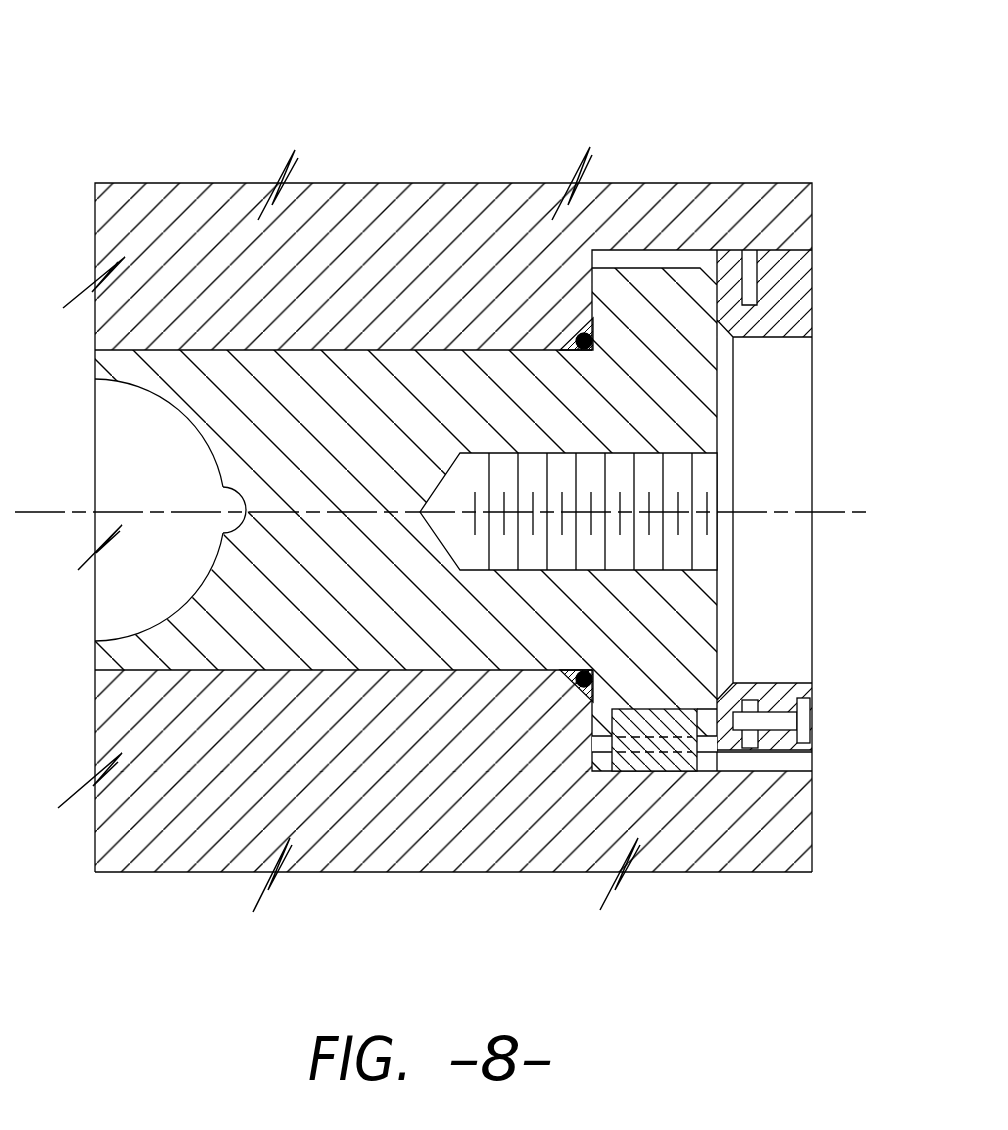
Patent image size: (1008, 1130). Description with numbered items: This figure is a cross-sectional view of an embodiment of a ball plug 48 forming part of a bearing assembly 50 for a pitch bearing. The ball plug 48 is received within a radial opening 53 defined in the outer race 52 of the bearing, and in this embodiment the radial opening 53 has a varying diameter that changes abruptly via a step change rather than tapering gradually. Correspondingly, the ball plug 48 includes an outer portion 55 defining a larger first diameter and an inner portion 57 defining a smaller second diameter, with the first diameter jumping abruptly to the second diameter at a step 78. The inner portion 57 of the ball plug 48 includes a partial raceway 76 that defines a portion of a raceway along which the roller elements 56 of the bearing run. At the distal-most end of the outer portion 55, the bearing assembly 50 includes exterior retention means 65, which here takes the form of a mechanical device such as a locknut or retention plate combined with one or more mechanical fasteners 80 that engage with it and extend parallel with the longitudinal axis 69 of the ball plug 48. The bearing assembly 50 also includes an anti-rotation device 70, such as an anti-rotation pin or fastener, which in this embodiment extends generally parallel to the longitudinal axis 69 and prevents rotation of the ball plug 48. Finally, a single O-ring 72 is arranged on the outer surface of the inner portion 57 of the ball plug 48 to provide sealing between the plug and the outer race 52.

The bearing assembly 50 is at (157, 110).
The inner portion 57 is at (367, 351).
The mechanical fasteners 80 is at (535, 470).
The outer portion 55 is at (675, 268).
The exterior retention means 65 is at (777, 415).
The longitudinal axis 69 is at (833, 513).
The roller elements 56 is at (104, 460).
The partial raceway 76 is at (178, 608).
The ball plug 48 is at (193, 676).
The outer race 52 is at (218, 823).
The radial opening 53 is at (392, 670).
The O-ring 72 is at (575, 683).
The step 78 is at (590, 690).
The anti-rotation device 70 is at (668, 748).